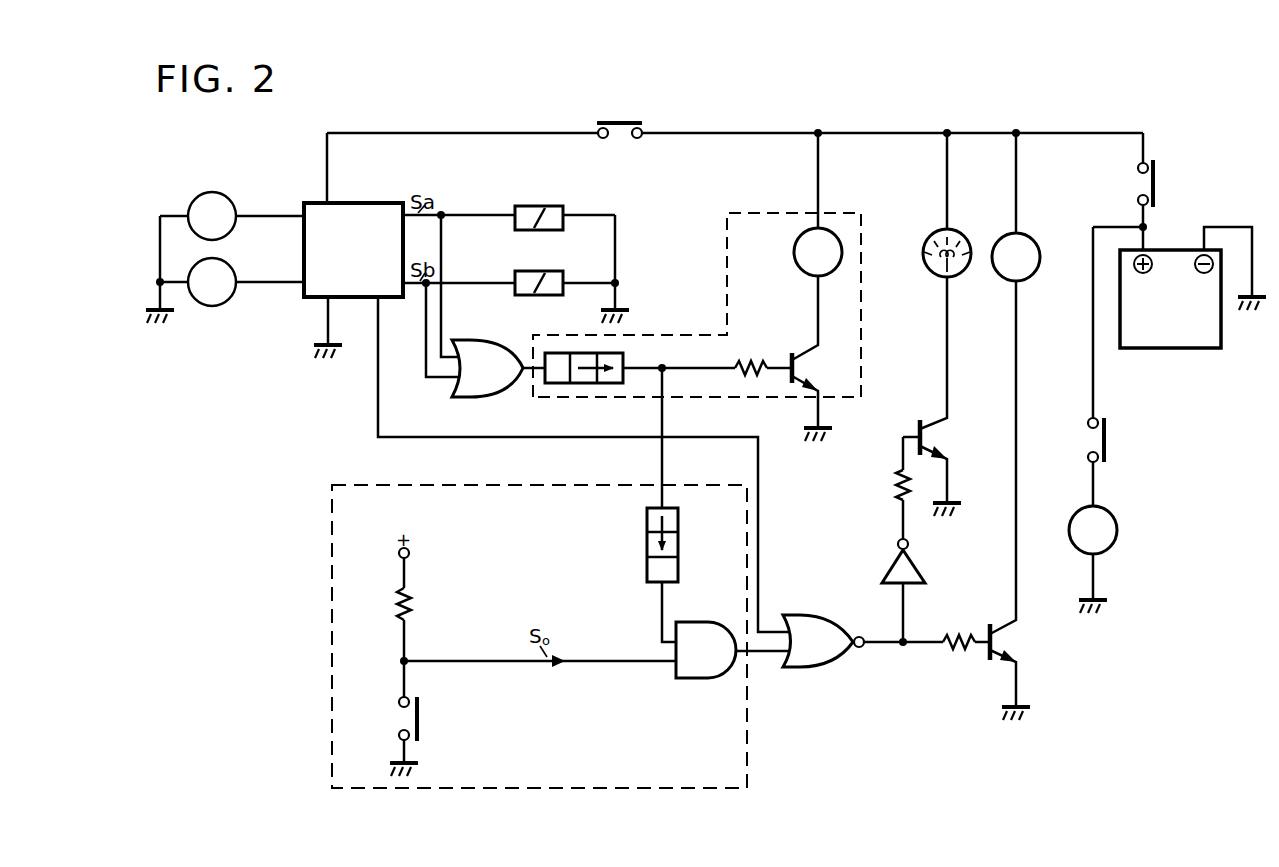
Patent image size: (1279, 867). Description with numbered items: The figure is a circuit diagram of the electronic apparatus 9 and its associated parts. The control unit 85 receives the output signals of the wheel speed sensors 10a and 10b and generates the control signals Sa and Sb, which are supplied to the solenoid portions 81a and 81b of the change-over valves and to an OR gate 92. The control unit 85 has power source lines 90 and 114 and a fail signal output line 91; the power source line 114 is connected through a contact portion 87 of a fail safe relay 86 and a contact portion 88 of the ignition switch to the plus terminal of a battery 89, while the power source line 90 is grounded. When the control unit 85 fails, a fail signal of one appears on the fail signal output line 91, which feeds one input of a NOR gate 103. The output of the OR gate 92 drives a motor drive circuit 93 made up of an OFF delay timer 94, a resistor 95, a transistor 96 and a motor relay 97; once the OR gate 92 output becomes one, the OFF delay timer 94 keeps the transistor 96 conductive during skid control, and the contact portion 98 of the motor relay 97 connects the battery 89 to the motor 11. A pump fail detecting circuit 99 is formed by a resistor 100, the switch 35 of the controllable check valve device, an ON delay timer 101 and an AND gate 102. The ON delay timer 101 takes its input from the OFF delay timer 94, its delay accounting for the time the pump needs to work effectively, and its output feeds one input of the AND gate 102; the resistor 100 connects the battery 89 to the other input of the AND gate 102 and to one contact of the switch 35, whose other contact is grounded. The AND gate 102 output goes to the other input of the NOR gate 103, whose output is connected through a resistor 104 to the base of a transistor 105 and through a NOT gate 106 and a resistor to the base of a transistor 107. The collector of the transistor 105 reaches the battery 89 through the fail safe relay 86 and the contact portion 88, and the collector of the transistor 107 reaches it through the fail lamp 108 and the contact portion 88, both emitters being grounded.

The control circuit 9 is at (824, 105).
The wheel speed sensor 10a is at (216, 185).
The wheel speed sensor 10b is at (211, 305).
The motor 11 is at (1118, 530).
The switch 35 is at (420, 700).
The solenoid portion 81a is at (524, 205).
The solenoid portion 81b is at (524, 271).
The control unit 85 is at (340, 203).
The fail safe relay 86 is at (1038, 244).
The contact portion of fail safe relay 87 is at (640, 120).
The contact portion of ignition switch 88 is at (1157, 175).
The battery 89 is at (1161, 349).
The power source line 90 is at (328, 325).
The fail signal output line 91 is at (378, 325).
The OR gate 92 is at (471, 399).
The motor drive circuit 93 is at (758, 209).
The OFF delay timer 94 is at (581, 385).
The resistor 95 is at (742, 374).
The transistor 96 is at (804, 371).
The motor relay 97 is at (838, 241).
The contact portion of motor relay 98 is at (1108, 426).
The pump fail detecting circuit 99 is at (329, 607).
The resistor 100 is at (412, 606).
The ON delay timer 101 is at (647, 541).
The AND gate 102 is at (698, 679).
The NOR gate 103 is at (806, 668).
The resistor 104 is at (948, 650).
The transistor 105 is at (1000, 645).
The NOT gate 106 is at (917, 573).
The transistor 107 is at (930, 440).
The fail lamp 108 is at (967, 239).
The power source line 114 is at (327, 170).